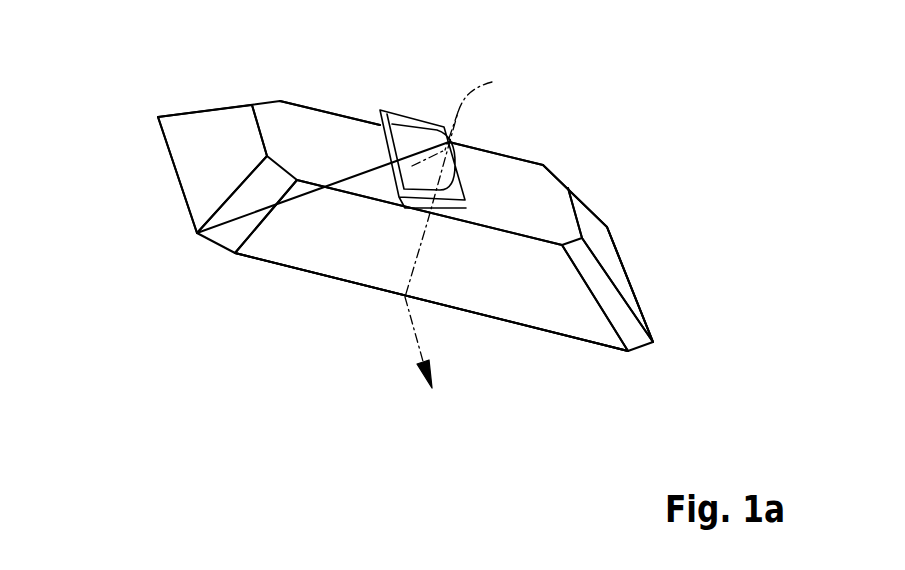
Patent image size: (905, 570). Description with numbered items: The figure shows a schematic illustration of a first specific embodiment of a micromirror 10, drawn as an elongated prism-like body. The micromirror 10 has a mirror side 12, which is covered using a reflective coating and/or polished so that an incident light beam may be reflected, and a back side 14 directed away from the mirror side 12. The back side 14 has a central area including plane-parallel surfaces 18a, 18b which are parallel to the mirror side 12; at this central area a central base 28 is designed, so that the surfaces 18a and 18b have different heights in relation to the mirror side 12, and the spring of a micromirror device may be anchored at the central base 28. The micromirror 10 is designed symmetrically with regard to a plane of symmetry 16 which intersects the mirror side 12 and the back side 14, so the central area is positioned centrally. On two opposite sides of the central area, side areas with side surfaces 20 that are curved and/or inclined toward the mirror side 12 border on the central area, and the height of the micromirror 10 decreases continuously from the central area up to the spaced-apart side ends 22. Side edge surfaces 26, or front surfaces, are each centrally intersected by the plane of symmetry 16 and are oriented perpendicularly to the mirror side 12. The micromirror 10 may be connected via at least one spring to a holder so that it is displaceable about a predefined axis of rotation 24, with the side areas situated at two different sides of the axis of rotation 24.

The micromirror 10 is at (547, 292).
The mirror side 12 is at (350, 283).
The back side 14 is at (530, 193).
The plane of symmetry 16 is at (408, 258).
The surface 18a is at (460, 100).
The surface 18b is at (330, 143).
The side surface 20 is at (212, 142).
The side end 22 is at (177, 168).
The axis of rotation 24 is at (416, 339).
The side edge surface 26 is at (470, 277).
The central base 28 is at (386, 114).